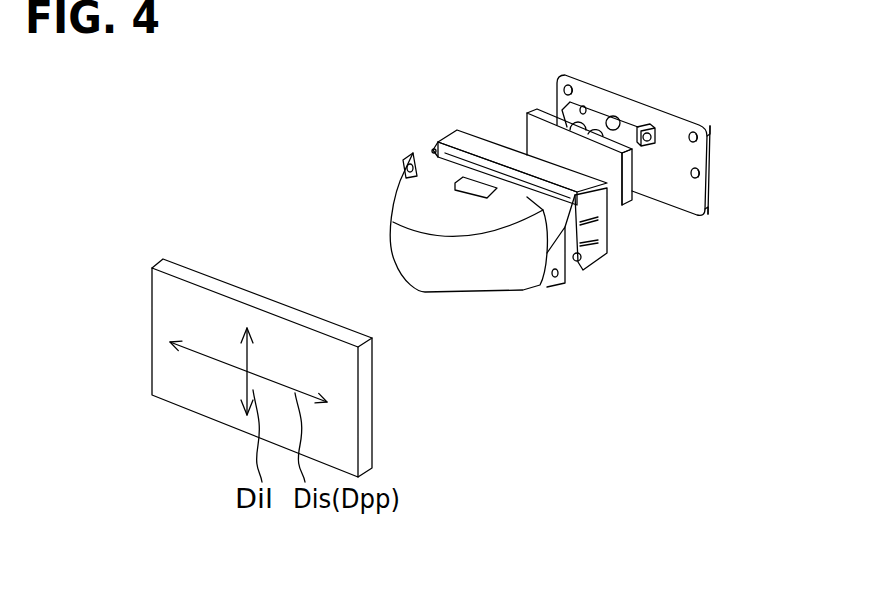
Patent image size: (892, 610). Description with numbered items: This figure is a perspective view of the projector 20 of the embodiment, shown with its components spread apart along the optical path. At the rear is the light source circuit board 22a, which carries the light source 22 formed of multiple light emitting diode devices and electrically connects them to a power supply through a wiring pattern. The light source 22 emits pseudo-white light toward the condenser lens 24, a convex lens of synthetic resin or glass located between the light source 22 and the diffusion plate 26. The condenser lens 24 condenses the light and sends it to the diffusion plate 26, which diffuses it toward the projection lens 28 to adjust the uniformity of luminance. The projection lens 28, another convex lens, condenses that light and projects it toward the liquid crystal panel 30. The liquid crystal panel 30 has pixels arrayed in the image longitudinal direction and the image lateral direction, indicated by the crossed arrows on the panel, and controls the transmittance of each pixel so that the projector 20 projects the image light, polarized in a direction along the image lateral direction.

The projector 20 is at (358, 148).
The light source 22 is at (678, 173).
The light source circuit board 22a is at (697, 158).
The condenser lens 24 is at (632, 180).
The diffusion plate 26 is at (615, 200).
The projection lens 28 is at (472, 282).
The liquid crystal panel 30 is at (365, 435).